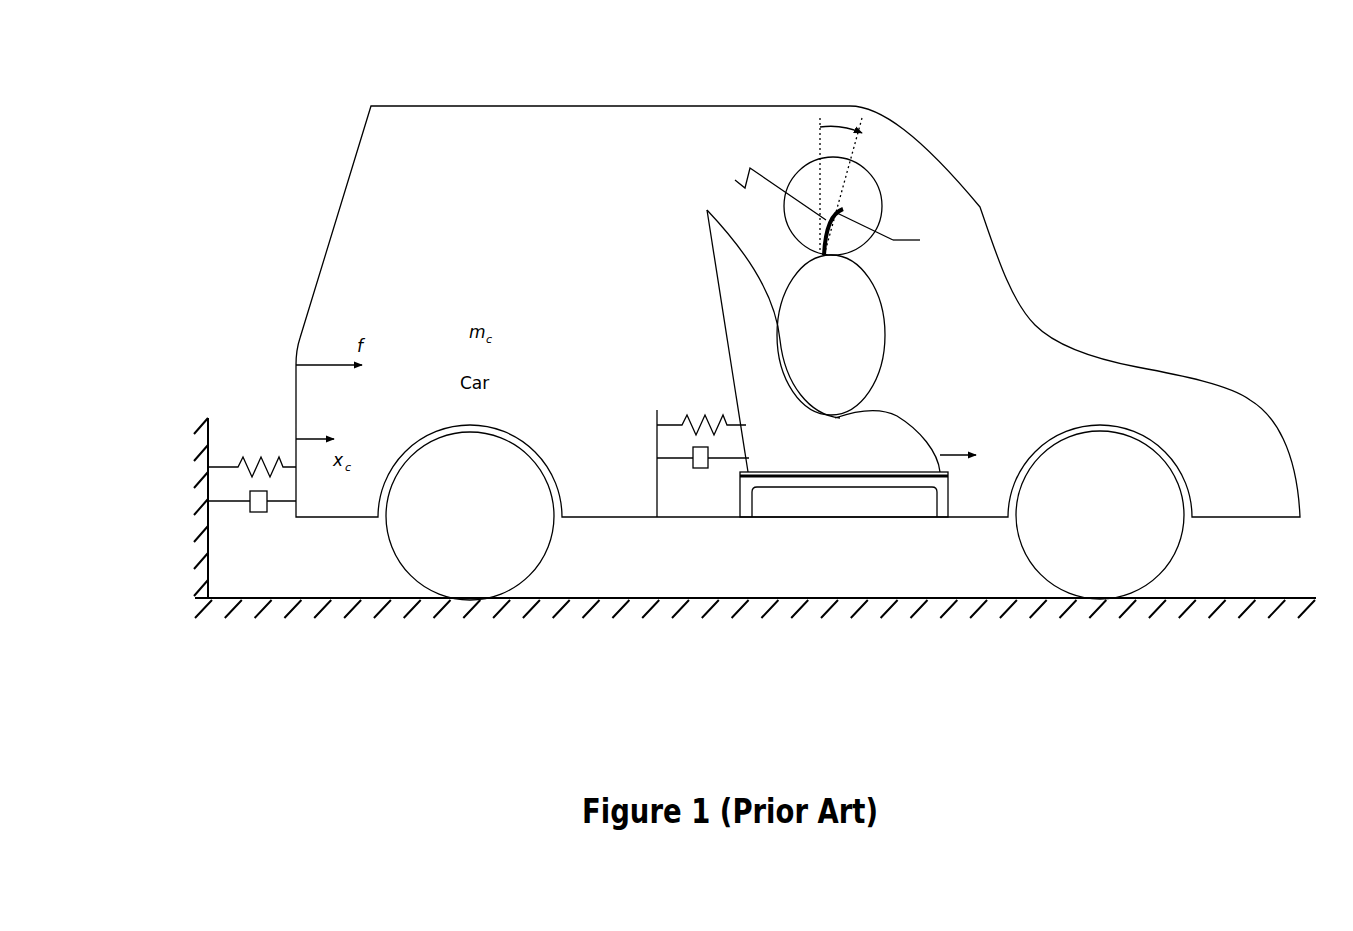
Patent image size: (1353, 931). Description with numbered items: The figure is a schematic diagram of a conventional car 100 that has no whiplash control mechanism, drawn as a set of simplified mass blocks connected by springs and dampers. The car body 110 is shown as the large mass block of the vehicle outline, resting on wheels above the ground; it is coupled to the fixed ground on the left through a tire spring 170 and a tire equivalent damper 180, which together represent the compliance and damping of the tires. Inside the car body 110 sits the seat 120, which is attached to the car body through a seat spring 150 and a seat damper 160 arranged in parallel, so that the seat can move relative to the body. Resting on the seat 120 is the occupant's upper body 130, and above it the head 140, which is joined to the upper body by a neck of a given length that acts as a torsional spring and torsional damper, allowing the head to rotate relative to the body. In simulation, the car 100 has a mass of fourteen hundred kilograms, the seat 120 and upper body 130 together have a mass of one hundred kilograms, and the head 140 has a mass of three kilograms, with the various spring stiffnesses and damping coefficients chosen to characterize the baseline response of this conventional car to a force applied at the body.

The car 100 is at (980, 207).
The car body 110 is at (1065, 380).
The seat 120 is at (917, 425).
The upper body 130 is at (885, 330).
The head 140 is at (865, 163).
The seat spring 150 is at (680, 420).
The seat damper 160 is at (710, 474).
The tire spring 170 is at (240, 462).
The tire equivalent damper 180 is at (264, 510).